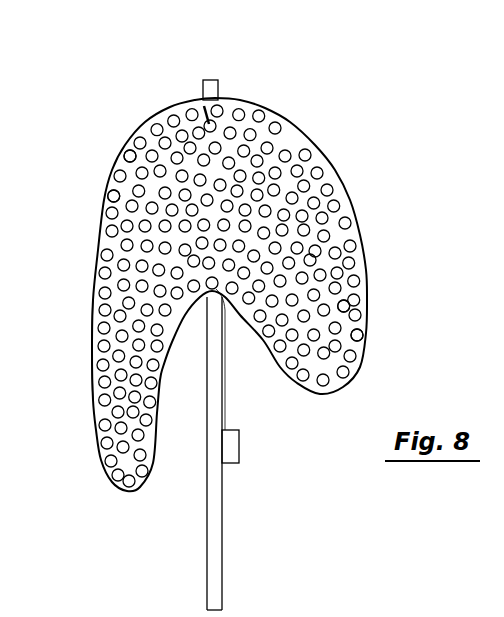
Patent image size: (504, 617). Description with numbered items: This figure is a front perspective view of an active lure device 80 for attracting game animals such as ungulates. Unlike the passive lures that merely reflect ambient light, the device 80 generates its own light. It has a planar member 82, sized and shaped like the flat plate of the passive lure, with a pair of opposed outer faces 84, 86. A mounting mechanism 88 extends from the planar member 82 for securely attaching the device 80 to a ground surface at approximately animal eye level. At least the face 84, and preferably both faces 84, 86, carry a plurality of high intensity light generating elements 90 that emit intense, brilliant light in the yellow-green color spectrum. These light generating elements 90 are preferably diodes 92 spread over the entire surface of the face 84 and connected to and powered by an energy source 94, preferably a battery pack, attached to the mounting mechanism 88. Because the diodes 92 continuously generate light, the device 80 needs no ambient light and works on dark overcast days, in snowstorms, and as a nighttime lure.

The active lure device 80 is at (345, 135).
The planar member 82 is at (353, 210).
The face 84 is at (168, 116).
The face 86 is at (100, 358).
The mounting mechanism 88 is at (215, 520).
The high intensity light generating elements 90 is at (287, 155).
The diodes 92 is at (113, 190).
The energy source 94 is at (228, 446).